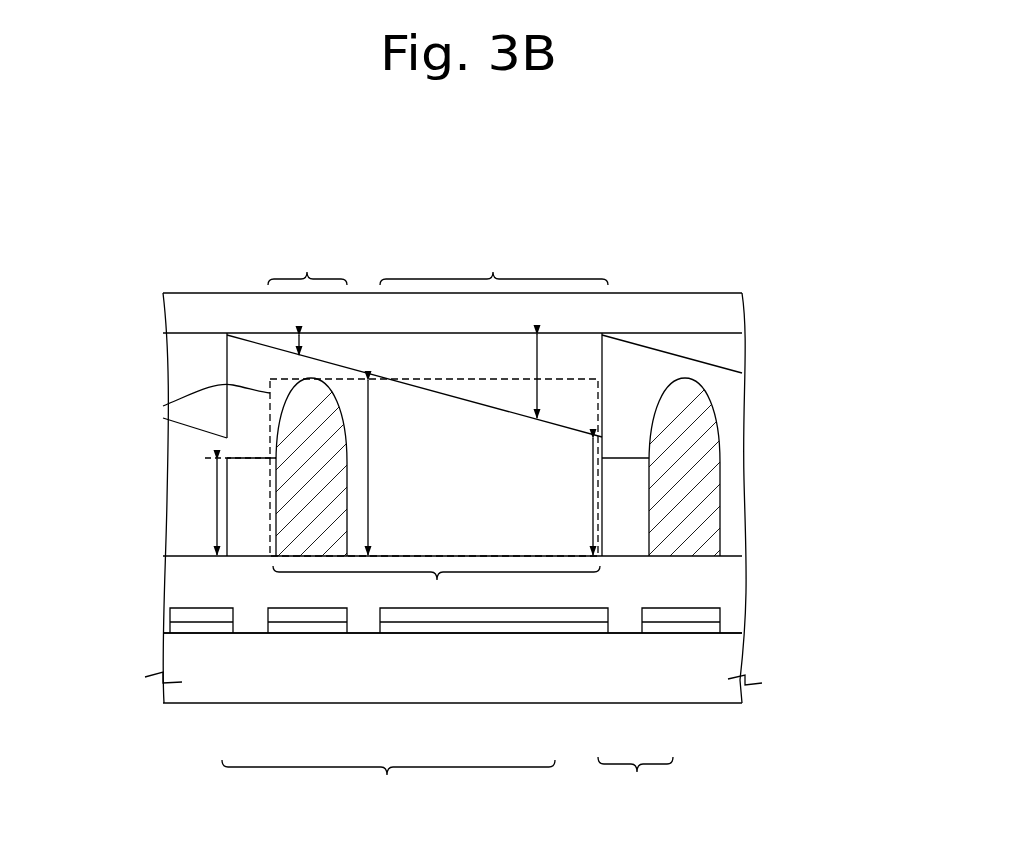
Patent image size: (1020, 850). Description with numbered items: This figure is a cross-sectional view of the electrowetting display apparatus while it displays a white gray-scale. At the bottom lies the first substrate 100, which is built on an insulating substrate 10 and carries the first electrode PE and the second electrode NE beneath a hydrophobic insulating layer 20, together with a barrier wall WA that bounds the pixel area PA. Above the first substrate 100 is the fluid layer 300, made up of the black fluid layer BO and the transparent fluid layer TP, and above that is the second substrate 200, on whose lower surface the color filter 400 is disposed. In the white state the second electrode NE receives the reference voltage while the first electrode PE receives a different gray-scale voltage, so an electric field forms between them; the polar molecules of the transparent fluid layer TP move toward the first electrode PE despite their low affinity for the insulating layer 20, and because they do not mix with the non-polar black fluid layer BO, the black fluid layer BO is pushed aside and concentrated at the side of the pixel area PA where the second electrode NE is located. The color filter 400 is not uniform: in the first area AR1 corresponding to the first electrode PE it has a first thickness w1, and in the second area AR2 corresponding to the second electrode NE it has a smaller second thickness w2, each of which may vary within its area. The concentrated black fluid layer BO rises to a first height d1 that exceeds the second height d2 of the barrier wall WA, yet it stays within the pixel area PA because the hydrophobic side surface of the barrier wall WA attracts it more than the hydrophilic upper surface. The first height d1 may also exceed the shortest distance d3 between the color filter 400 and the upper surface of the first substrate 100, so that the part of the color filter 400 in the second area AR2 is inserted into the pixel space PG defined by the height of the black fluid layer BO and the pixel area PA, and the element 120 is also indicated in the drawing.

The second substrate 200 is at (733, 313).
The color filter 400 is at (578, 395).
The pixel space PG is at (163, 406).
The first area AR1 is at (494, 265).
The second area AR2 is at (307, 265).
The first thickness w1 is at (523, 376).
The second thickness w2 is at (314, 345).
The first height d1 is at (381, 467).
The second height d2 is at (204, 507).
The shortest distance d3 is at (579, 496).
The pixel area PA is at (436, 587).
The transparent fluid layer TP is at (530, 520).
The black fluid layer BO is at (703, 543).
The barrier wall WA is at (250, 538).
The first substrate 100 is at (388, 782).
The fluid layer 300 is at (635, 781).
The insulating substrate 10 is at (543, 660).
The insulating layer 20 is at (483, 600).
The light emitting element 120 is at (410, 615).
The second electrode NE is at (283, 630).
The first electrode PE is at (452, 625).